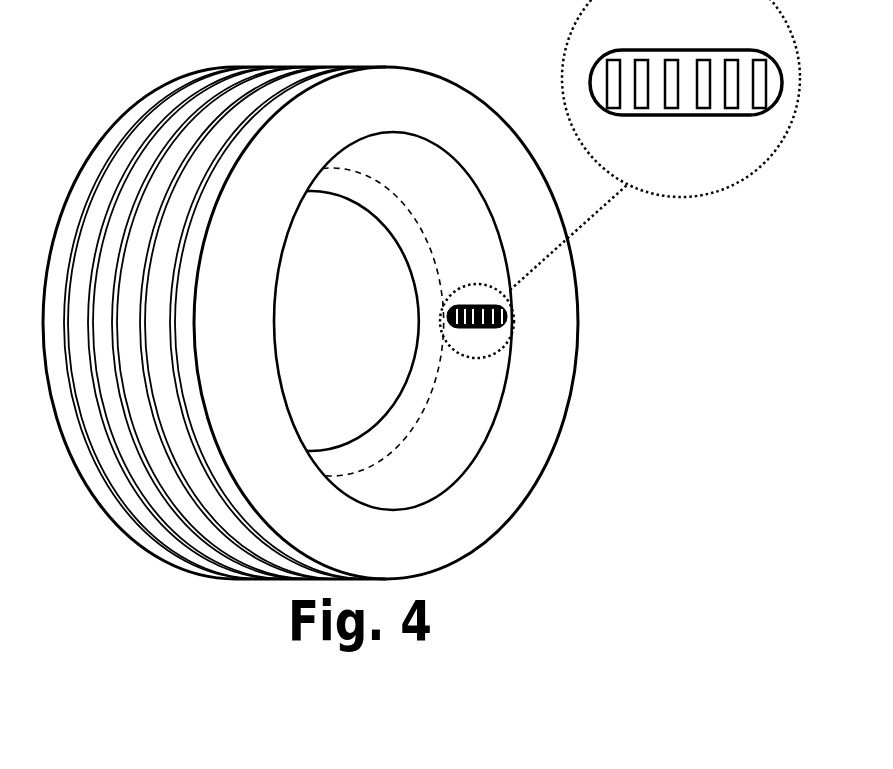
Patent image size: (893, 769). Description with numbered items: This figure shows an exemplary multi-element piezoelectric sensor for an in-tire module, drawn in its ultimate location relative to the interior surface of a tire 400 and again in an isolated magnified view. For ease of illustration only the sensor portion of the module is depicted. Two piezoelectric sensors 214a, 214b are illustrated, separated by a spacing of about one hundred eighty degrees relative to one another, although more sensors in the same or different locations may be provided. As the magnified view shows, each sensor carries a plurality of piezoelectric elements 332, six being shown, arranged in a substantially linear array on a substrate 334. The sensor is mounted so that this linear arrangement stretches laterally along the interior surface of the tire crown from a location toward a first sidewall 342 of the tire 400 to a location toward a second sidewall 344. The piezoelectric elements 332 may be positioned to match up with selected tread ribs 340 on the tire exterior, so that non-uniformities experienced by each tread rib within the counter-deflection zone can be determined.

The tire 400 is at (340, 303).
The tread ribs 340 is at (226, 64).
The second sidewall 344 is at (562, 367).
The piezoelectric sensor 214b is at (277, 353).
The first sidewall 342 is at (418, 282).
The piezoelectric sensor 214a is at (513, 317).
The piezoelectric elements 332 is at (642, 65).
The substrate 334 is at (686, 87).